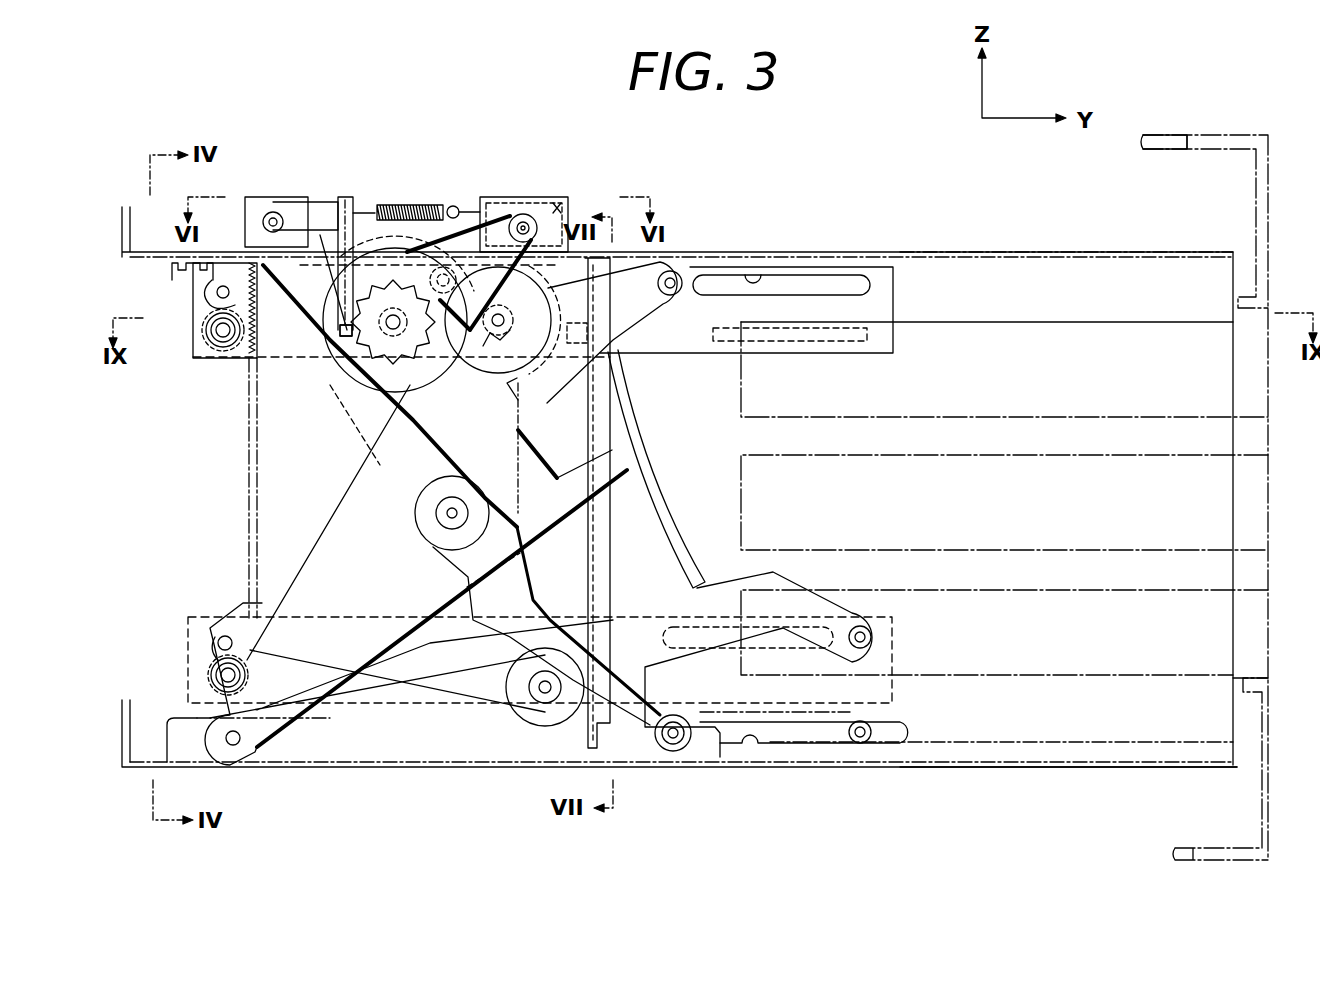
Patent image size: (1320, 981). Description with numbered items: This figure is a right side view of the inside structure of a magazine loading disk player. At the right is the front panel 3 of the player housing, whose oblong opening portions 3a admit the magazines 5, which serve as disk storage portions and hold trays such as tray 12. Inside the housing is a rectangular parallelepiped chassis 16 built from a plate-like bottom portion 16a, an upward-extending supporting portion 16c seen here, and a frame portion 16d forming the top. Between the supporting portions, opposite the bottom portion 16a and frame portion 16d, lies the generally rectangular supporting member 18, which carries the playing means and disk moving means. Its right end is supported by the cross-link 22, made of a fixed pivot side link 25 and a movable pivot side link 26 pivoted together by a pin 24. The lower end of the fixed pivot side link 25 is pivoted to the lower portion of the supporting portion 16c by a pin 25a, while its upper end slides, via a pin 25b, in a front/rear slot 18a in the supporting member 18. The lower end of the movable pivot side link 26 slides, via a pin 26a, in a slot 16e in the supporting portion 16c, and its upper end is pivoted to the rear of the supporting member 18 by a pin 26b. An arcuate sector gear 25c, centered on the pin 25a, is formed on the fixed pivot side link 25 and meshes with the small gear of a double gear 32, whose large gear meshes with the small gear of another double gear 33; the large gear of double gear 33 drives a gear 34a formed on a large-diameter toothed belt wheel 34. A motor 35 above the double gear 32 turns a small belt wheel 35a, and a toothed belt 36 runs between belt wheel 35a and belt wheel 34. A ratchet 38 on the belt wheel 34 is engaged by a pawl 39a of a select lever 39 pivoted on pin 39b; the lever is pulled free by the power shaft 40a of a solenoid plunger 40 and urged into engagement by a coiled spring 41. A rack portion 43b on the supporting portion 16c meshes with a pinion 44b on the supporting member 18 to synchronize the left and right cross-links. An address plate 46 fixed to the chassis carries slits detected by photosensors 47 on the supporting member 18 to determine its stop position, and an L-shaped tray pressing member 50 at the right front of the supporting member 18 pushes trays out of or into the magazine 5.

The front panel 3 is at (1258, 150).
The opening portion 3a is at (1270, 680).
The magazine 5 is at (1262, 615).
The tray 12 is at (1160, 128).
The chassis 16 is at (1075, 240).
The bottom portion 16a is at (1010, 767).
The supporting portion 16c is at (1032, 262).
The frame portion 16d is at (968, 252).
The slot 16e is at (752, 742).
The supporting member 18 is at (868, 268).
The slot 18a is at (752, 282).
The cross-link 22 is at (283, 529).
The pin 24 is at (452, 513).
The fixed pivot side link 25 is at (363, 497).
The pin 25a is at (236, 746).
The pin 25b is at (672, 272).
The arcuate sector gear 25c is at (172, 268).
The movable pivot side link 26 is at (508, 635).
The pin 26a is at (673, 742).
The pin 26b is at (217, 292).
The double gear 32 is at (533, 285).
The double gear 33 is at (443, 265).
The toothed belt wheel 34 is at (392, 265).
The gear 34a is at (385, 370).
The motor 35 is at (560, 200).
The belt wheel 35a is at (525, 214).
The toothed belt 36 is at (493, 240).
The ratchet 38 is at (335, 388).
The select lever 39 is at (320, 202).
The pawl 39a is at (300, 354).
The pin 39b is at (347, 197).
The solenoid plunger 40 is at (253, 197).
The power shaft 40a is at (275, 212).
The coiled spring 41 is at (398, 205).
The rack portion 43b is at (228, 350).
The pinion 44b is at (205, 332).
The address plate 46 is at (612, 400).
The photosensor 47 is at (608, 330).
The tray pressing member 50 is at (825, 330).